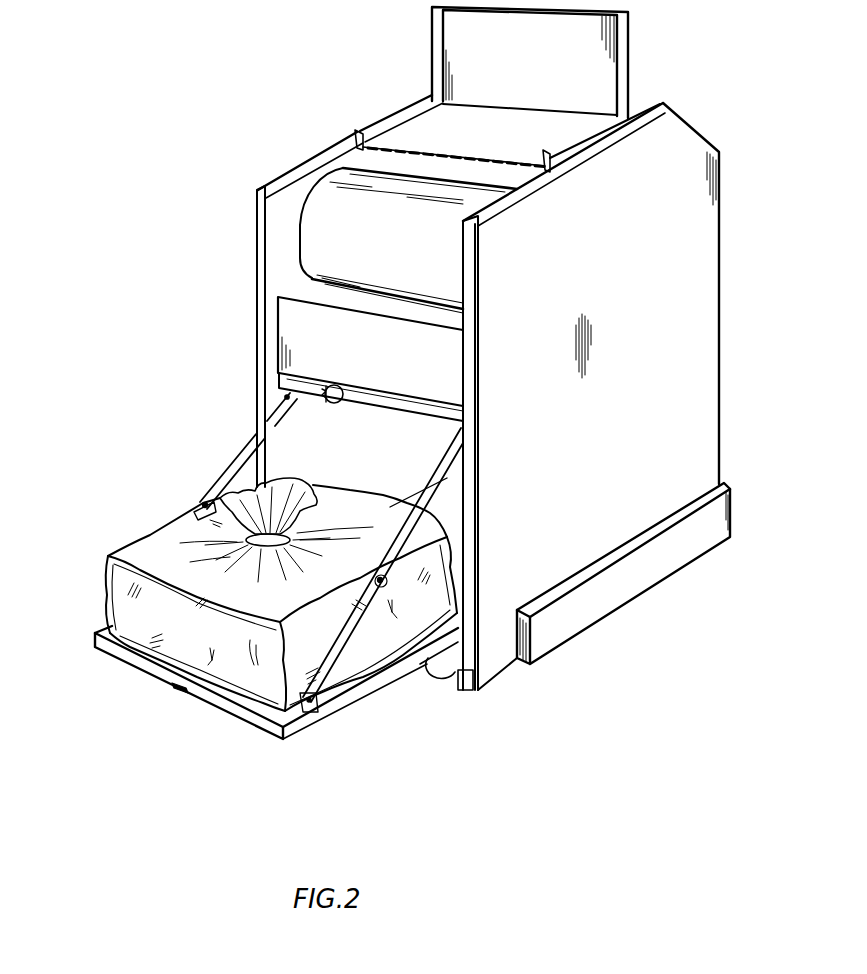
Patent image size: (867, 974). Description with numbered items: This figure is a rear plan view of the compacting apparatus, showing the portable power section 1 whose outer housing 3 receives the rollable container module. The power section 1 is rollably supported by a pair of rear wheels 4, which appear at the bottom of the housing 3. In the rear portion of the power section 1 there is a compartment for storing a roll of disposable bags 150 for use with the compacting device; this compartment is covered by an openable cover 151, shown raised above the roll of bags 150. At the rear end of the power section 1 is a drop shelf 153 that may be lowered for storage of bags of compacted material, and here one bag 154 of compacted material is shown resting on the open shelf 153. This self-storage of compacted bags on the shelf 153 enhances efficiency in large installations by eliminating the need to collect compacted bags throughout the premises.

The power section 1 is at (726, 153).
The outer housing 3 is at (681, 135).
The rear wheels 4 is at (570, 640).
The roll of disposable bags 150 is at (338, 182).
The openable cover 151 is at (631, 53).
The drop shelf 153 is at (126, 670).
The bag of compacted material 154 is at (110, 590).